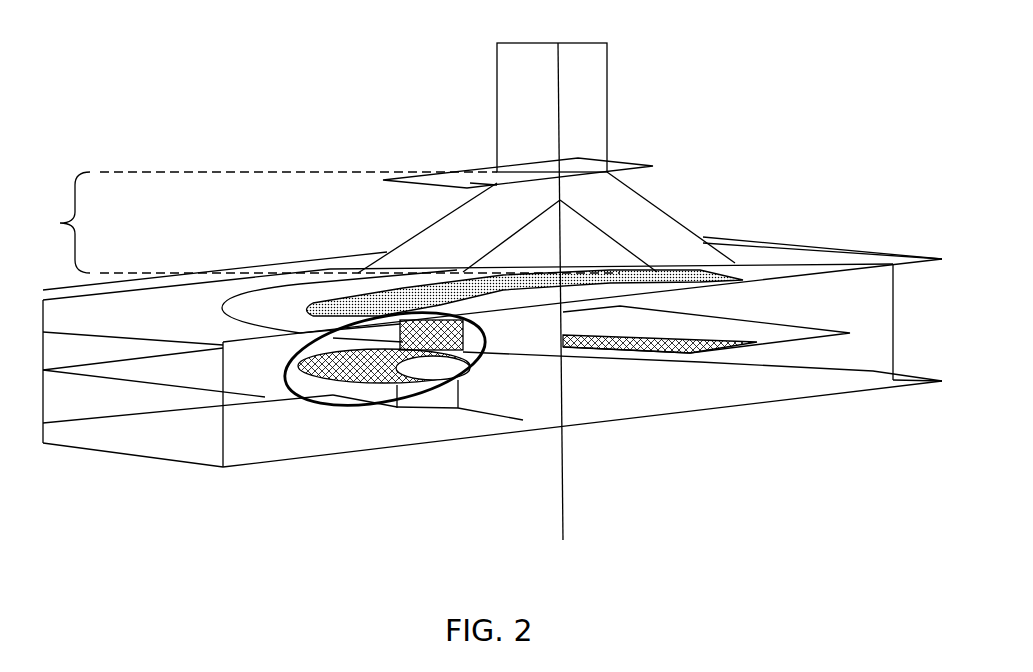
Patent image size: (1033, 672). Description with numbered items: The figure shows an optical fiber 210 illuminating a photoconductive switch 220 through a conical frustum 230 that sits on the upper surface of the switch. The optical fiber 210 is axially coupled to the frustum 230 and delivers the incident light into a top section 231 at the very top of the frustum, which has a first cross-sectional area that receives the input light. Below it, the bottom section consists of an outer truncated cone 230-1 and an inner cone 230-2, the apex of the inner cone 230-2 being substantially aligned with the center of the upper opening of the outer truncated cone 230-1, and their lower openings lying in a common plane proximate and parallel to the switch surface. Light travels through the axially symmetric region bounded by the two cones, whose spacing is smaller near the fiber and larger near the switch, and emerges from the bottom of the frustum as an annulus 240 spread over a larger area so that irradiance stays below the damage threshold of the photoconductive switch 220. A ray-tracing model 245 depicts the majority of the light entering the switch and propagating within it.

The optical fiber 210 is at (582, 128).
The top section 231 is at (493, 177).
The frustum 230 is at (321, 222).
The outer truncated cone 230-1 is at (703, 238).
The inner cone 230-2 is at (592, 212).
The annulus 240 is at (412, 297).
The ray-tracing model 245 is at (320, 405).
The photoconductive switch 220 is at (798, 318).